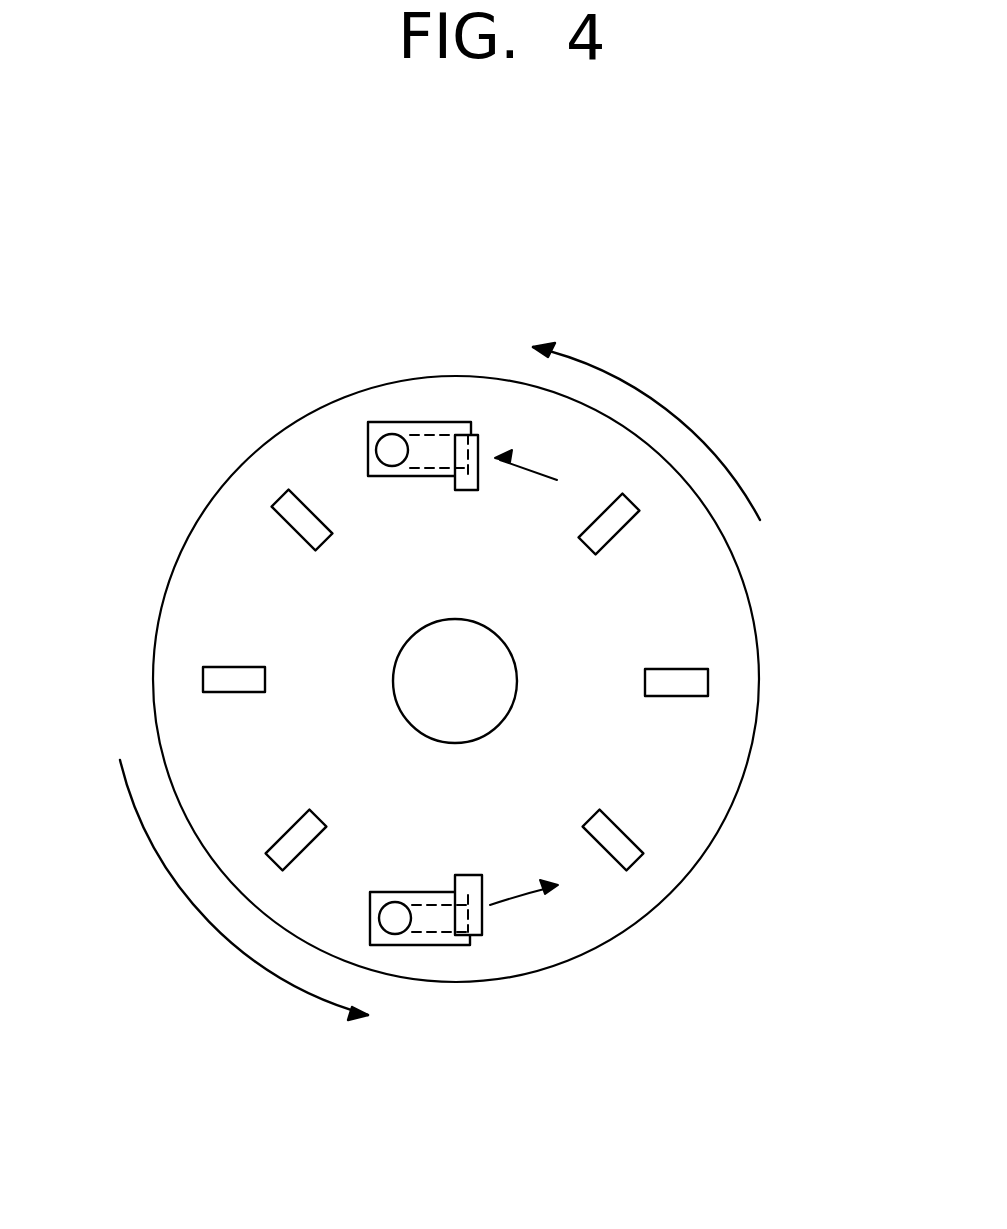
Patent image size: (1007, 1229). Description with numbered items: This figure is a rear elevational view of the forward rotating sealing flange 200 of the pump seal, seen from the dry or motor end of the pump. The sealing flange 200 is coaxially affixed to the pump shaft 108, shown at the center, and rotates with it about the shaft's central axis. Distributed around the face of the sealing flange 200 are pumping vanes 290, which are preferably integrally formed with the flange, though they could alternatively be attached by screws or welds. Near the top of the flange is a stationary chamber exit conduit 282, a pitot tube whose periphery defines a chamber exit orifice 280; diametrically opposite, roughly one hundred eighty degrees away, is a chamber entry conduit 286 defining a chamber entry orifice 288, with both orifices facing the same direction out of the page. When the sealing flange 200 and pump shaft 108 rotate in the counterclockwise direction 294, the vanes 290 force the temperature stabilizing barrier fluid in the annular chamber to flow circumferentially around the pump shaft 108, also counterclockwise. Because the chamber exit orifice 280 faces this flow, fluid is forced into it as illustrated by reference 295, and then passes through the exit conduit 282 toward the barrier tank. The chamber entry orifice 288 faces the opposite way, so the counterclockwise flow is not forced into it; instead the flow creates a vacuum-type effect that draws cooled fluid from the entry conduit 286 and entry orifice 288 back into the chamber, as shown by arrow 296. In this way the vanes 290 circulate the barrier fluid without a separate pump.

The pump shaft 108 is at (488, 652).
The first rotating sealing flange 200 is at (722, 763).
The chamber exit orifice 280 is at (430, 440).
The chamber exit conduit 282 is at (390, 435).
The chamber entry conduit 286 is at (395, 910).
The chamber entry orifice 288 is at (430, 933).
The pumping vanes 290 is at (213, 672).
The counterclockwise direction 294 is at (667, 410).
The fluid entry into exit orifices 295 is at (527, 465).
The arrow indicating fluid drawn from entry orifices 296 is at (523, 900).